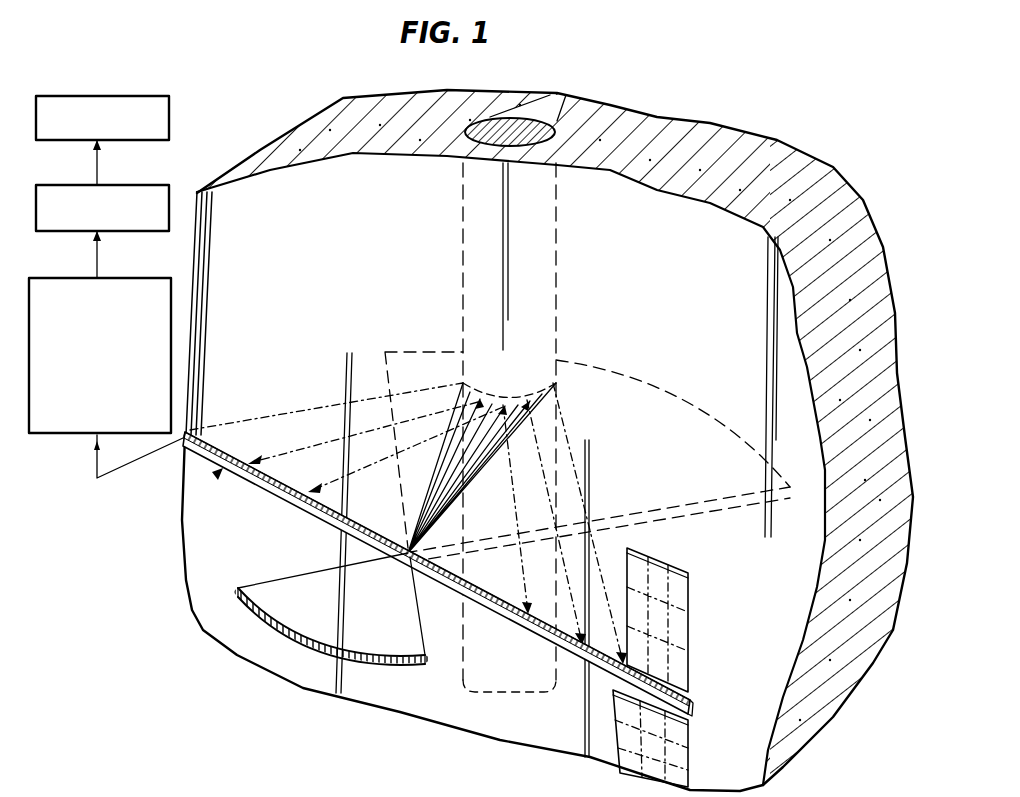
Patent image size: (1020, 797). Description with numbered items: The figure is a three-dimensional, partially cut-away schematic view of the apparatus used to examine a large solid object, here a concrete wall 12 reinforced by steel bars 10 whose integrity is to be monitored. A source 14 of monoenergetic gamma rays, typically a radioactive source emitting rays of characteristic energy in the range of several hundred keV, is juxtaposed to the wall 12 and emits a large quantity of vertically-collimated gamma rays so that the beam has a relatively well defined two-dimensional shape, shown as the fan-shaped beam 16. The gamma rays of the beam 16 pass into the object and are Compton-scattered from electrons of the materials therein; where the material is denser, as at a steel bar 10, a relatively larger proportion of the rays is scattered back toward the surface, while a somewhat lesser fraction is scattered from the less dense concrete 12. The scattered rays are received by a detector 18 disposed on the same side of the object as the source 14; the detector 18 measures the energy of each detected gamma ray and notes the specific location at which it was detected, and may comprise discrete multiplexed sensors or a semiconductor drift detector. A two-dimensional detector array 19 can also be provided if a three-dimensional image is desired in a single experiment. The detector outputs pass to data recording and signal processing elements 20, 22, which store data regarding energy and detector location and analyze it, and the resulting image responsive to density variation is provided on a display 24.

The steel bars 10 is at (553, 92).
The concrete wall 12 is at (383, 96).
The source 14 is at (288, 610).
The fan-shaped beam 16 is at (680, 460).
The detector 18 is at (223, 470).
The two-dimensional detector array 19 is at (683, 655).
The data recording element 20 is at (56, 435).
The signal processing element 22 is at (136, 184).
The display 24 is at (145, 95).